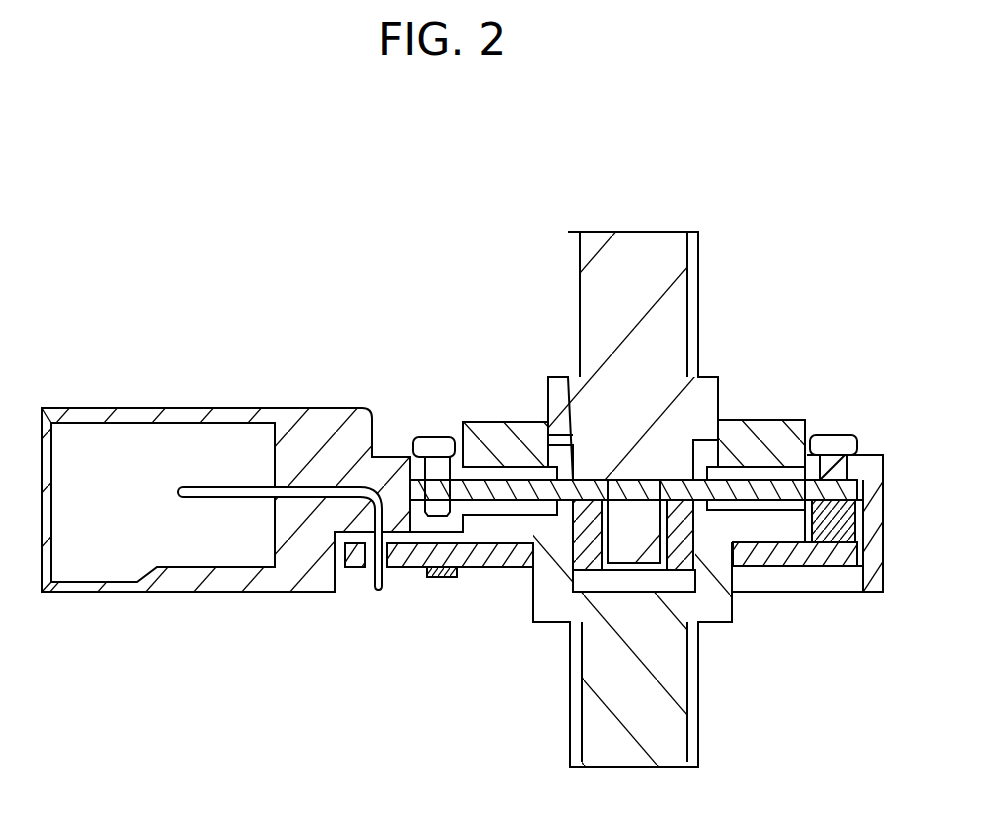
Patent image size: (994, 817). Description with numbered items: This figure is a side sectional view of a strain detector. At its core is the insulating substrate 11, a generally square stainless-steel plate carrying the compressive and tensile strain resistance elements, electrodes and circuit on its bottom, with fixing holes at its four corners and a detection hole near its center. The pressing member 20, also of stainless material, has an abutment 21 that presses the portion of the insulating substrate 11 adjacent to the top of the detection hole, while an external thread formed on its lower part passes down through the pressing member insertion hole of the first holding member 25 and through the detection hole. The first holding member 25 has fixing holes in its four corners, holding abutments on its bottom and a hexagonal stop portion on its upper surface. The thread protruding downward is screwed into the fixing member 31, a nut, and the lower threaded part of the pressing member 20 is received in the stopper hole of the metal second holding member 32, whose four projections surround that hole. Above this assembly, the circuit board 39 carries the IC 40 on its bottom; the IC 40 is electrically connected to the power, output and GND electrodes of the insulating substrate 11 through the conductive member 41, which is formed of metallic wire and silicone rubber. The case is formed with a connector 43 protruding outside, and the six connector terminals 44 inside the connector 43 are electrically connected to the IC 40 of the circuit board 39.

The insulating substrate 11 is at (823, 490).
The pressing member 20 is at (627, 245).
The abutment 21 is at (678, 465).
The first holding member 25 is at (773, 418).
The fixing member 31 is at (693, 560).
The second holding member 32 is at (723, 543).
The circuit board 39 is at (507, 553).
The IC 40 is at (436, 572).
The conductive member 41 is at (842, 543).
The connector 43 is at (185, 410).
The connector terminals 44 is at (209, 492).